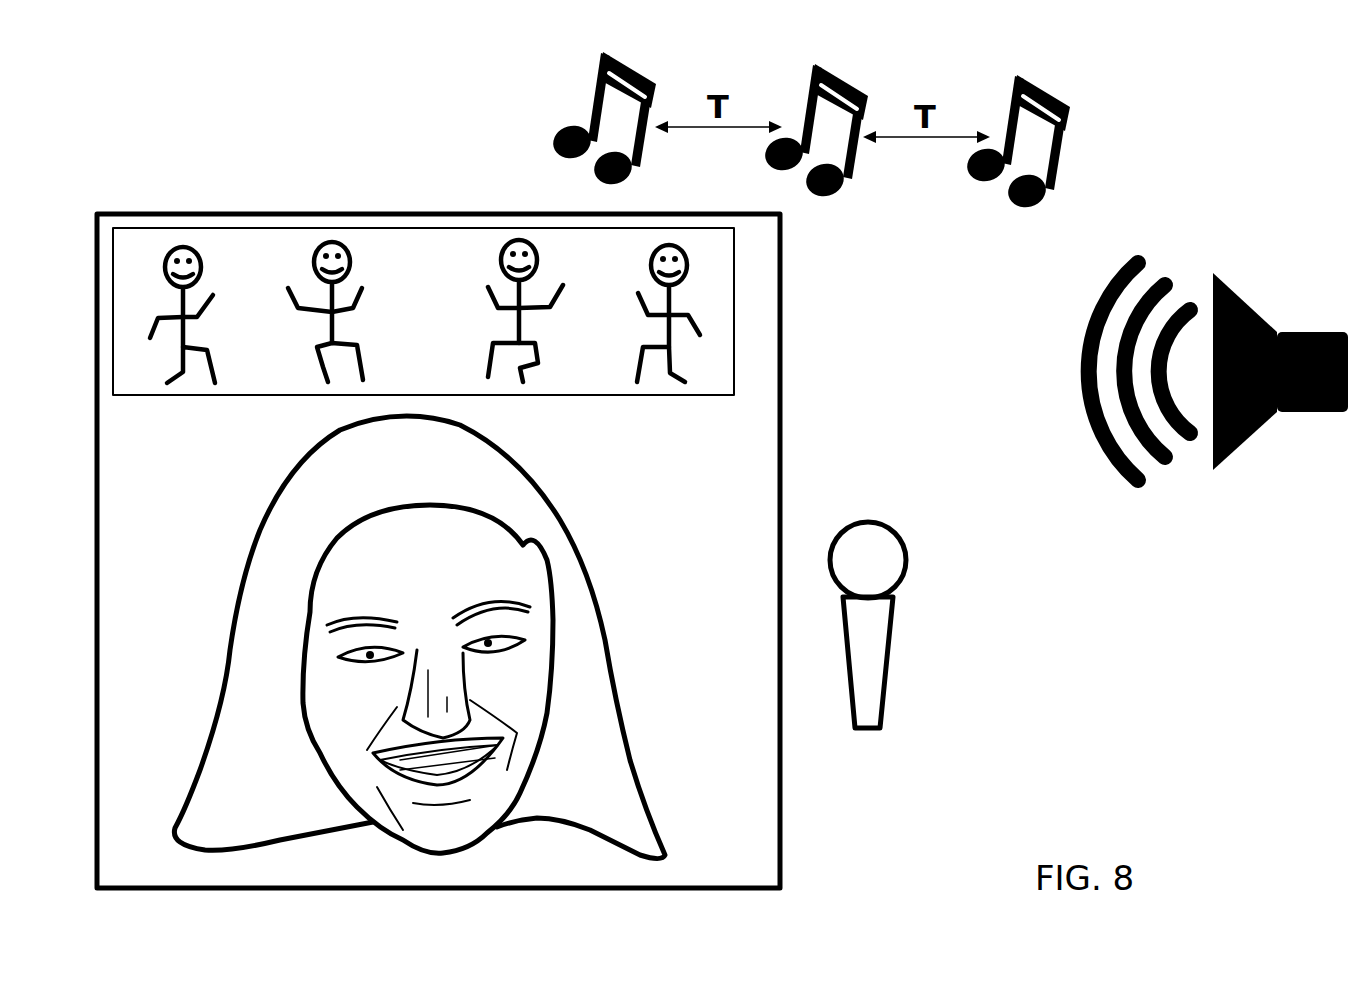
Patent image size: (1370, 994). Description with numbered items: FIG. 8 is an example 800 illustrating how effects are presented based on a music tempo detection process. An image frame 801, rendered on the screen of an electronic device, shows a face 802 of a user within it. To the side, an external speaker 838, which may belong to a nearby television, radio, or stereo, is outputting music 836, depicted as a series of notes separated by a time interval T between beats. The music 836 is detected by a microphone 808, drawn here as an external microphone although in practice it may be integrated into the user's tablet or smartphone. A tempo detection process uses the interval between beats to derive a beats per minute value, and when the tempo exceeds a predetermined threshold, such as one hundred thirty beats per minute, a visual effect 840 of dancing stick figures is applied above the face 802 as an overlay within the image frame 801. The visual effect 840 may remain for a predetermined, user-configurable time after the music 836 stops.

The example 800 is at (270, 113).
The image frame 801 is at (416, 212).
The face 802 is at (553, 505).
The microphone 808 is at (870, 672).
The music 836 is at (1062, 80).
The external speaker 838 is at (1230, 283).
The visual effect 840 is at (262, 396).